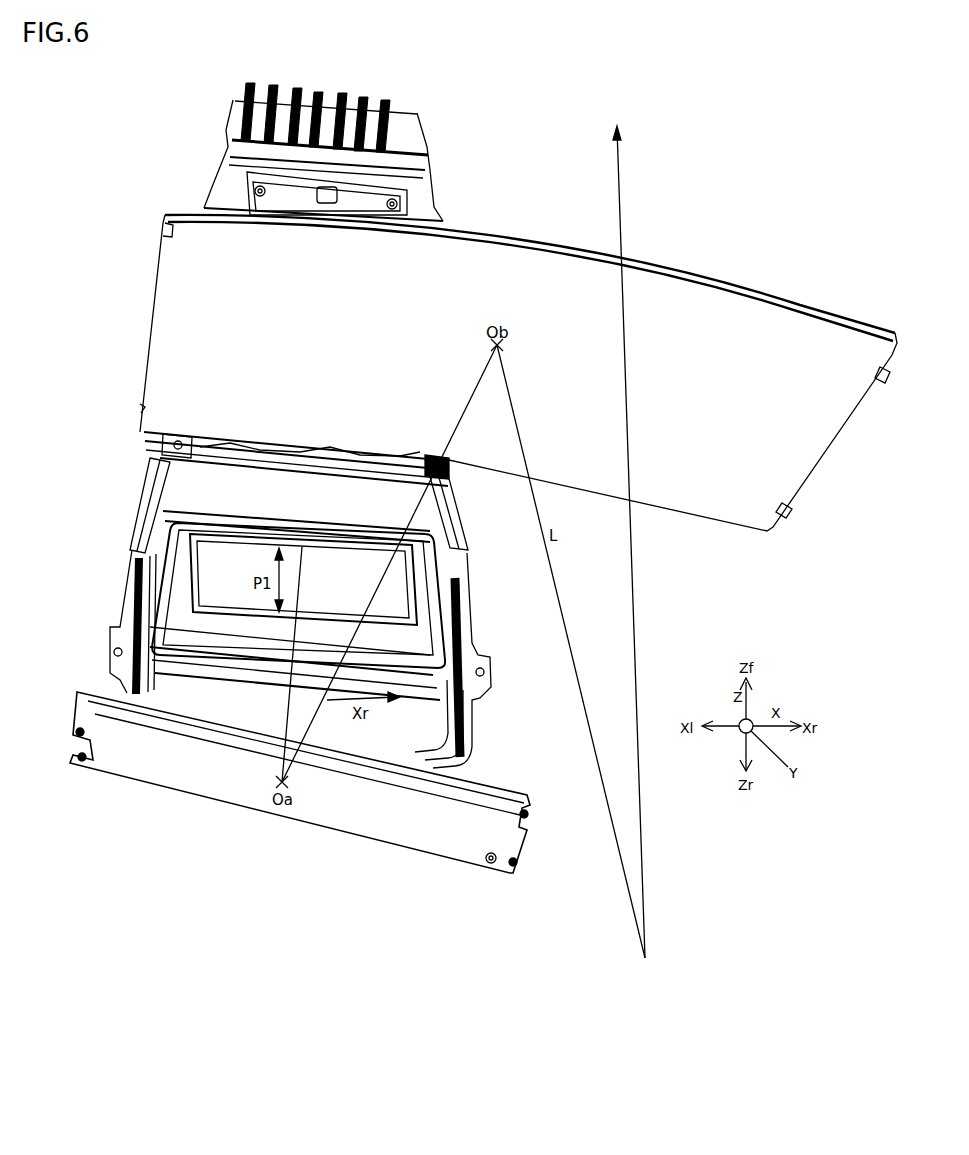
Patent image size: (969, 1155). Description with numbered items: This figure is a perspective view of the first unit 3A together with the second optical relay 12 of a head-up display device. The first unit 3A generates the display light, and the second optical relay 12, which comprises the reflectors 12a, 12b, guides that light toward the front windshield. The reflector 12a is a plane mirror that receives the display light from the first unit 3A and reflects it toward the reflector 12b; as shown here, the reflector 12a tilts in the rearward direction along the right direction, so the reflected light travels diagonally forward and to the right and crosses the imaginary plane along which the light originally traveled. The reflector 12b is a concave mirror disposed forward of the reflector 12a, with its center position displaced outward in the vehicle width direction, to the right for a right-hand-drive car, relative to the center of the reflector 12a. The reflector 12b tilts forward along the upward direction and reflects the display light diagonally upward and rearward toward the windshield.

The first unit 3A is at (140, 472).
The second optical relay 12 is at (542, 664).
The reflector 12a is at (484, 809).
The reflector 12b is at (487, 447).